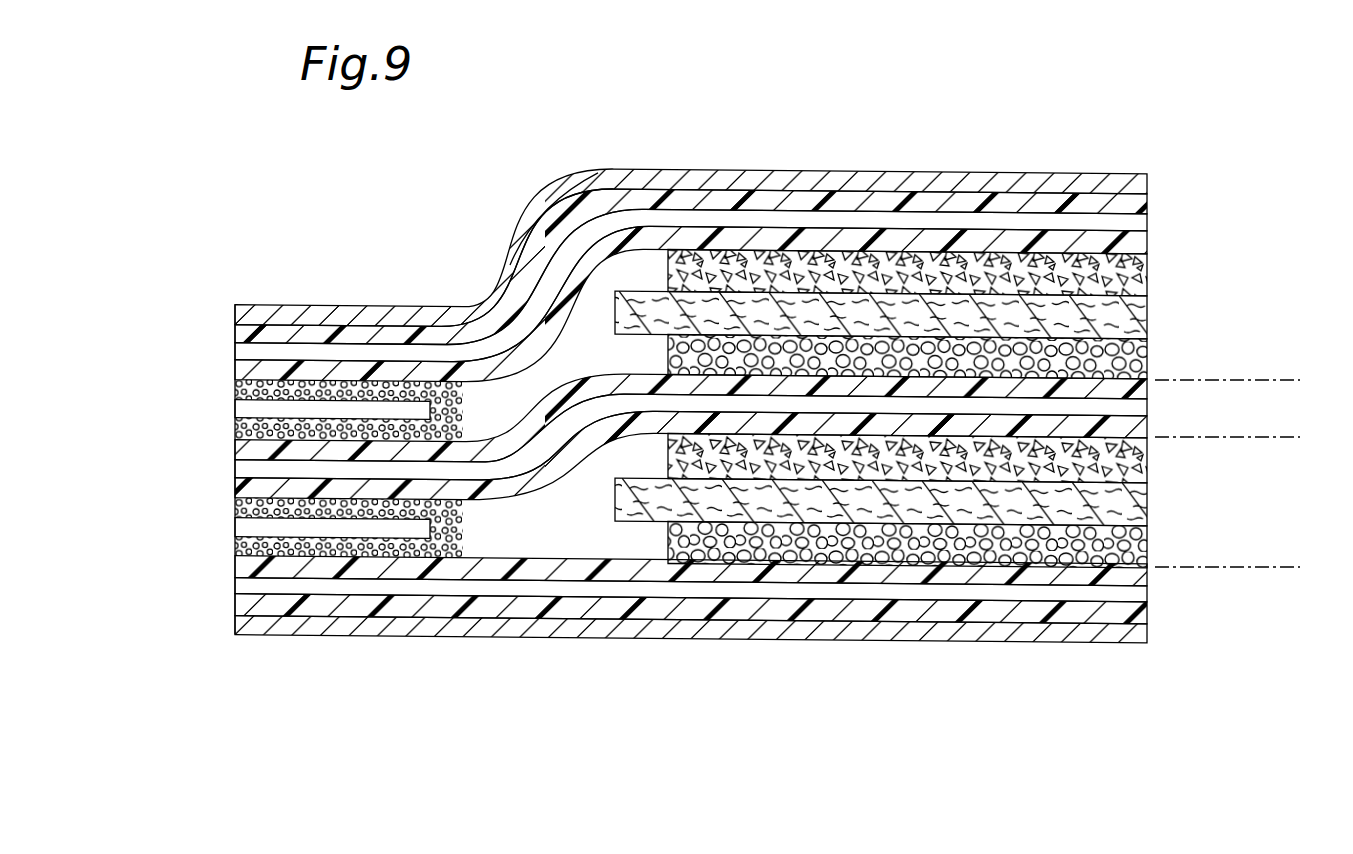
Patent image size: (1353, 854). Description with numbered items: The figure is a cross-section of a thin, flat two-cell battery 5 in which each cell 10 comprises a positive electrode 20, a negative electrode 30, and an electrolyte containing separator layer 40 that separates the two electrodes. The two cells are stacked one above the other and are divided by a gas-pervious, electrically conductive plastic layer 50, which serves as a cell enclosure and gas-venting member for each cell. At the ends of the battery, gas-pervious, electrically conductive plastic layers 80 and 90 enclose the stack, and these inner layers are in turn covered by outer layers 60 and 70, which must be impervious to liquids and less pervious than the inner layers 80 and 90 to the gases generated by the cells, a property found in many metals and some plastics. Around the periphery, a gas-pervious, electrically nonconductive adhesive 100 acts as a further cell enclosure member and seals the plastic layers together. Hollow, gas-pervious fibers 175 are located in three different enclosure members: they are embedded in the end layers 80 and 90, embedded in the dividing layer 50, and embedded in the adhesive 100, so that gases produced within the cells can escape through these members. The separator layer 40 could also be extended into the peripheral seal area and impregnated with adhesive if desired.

The battery 5 is at (667, 158).
The cell 10 is at (1293, 252).
The positive electrode 20 is at (1147, 279).
The negative electrode 30 is at (1147, 363).
The electrolyte containing layer 40 is at (1147, 321).
The gas-pervious, electrically conductive plastic layer 50 is at (1236, 380).
The layer 60 is at (1147, 183).
The layer 70 is at (1147, 636).
The gas-pervious, electrically conductive plastic layer 80 is at (1155, 193).
The gas-pervious, electrically conductive plastic layer 90 is at (1155, 622).
The gas-pervious, electrically nonconductive adhesive 100 is at (463, 417).
The hollow, gas-pervious fibers 175 is at (240, 585).